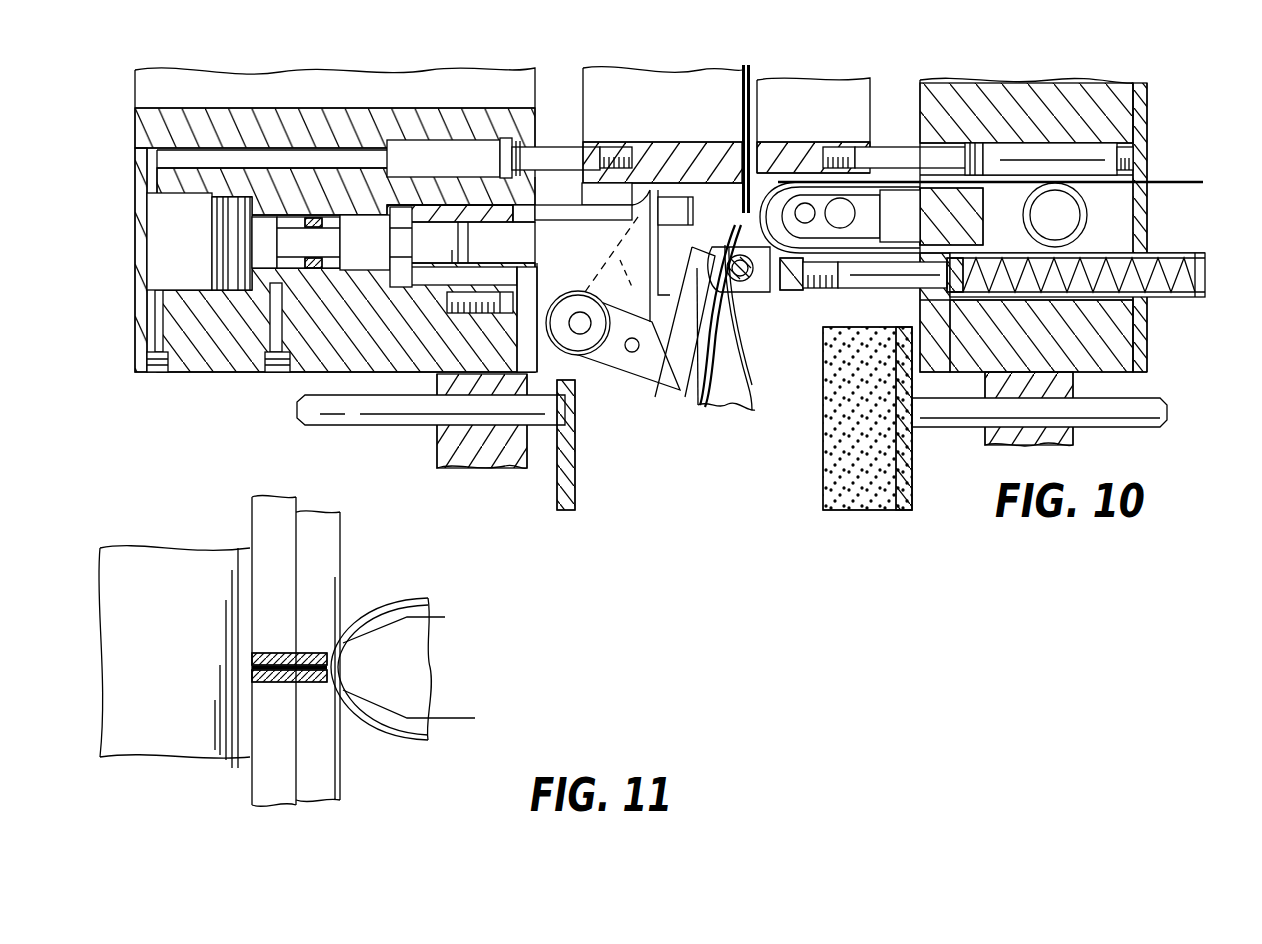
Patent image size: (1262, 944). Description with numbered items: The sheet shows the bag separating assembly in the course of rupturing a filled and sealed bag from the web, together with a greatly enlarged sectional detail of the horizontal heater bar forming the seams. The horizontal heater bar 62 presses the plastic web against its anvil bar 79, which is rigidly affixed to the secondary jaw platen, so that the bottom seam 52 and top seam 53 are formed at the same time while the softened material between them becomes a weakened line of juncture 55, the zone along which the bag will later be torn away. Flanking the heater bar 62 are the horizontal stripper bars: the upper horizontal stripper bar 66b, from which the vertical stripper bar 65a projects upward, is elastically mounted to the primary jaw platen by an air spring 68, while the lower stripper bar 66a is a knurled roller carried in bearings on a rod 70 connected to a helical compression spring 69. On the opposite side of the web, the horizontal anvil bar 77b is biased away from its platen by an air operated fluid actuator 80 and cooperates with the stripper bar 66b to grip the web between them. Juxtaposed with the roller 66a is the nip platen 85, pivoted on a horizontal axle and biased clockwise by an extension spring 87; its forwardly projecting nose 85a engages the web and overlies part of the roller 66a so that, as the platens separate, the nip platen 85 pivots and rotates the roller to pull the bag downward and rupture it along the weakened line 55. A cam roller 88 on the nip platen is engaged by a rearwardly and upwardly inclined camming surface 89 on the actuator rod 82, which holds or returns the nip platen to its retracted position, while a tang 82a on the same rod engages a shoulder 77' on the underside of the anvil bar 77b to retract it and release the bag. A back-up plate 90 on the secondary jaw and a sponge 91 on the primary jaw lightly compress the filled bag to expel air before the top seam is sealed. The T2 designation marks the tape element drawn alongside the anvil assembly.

In FIG. 10, the air operated fluid actuator 80 is at (457, 146).
In FIG. 10, the shoulder 77' is at (615, 154).
In FIG. 10, the horizontal anvil bar 77b is at (718, 109).
In FIG. 10, the vertical stripper bar 65a is at (813, 92).
In FIG. 10, the upper horizontal stripper bar 66b is at (850, 109).
In FIG. 10, the horizontal heater bar 62 is at (818, 207).
In FIG. 11, the horizontal heater bar 62 is at (415, 635).
In FIG. 10, the air spring 68 is at (1108, 148).
In FIG. 10, the second tape T2 is at (1176, 180).
In FIG. 10, the helical compression spring 69 is at (1167, 270).
In FIG. 10, the tang 82a is at (628, 222).
In FIG. 10, the extension spring 87 is at (639, 253).
In FIG. 10, the nose 85a is at (798, 317).
In FIG. 10, the lower stripper bar 66a is at (718, 282).
In FIG. 10, the rod 70 is at (890, 273).
In FIG. 10, the actuator rod 82 is at (395, 258).
In FIG. 10, the nip platen 85 is at (668, 386).
In FIG. 10, the camming surface 89 is at (627, 312).
In FIG. 10, the cam roller 88 is at (558, 350).
In FIG. 10, the back-up plate 90 is at (568, 473).
In FIG. 10, the sponge 91 is at (862, 490).
In FIG. 11, the horizontal anvil bar 79 is at (113, 638).
In FIG. 11, the bottom seam 52 is at (305, 657).
In FIG. 11, the weakened line of juncture 55 is at (252, 668).
In FIG. 11, the top seam 53 is at (305, 680).